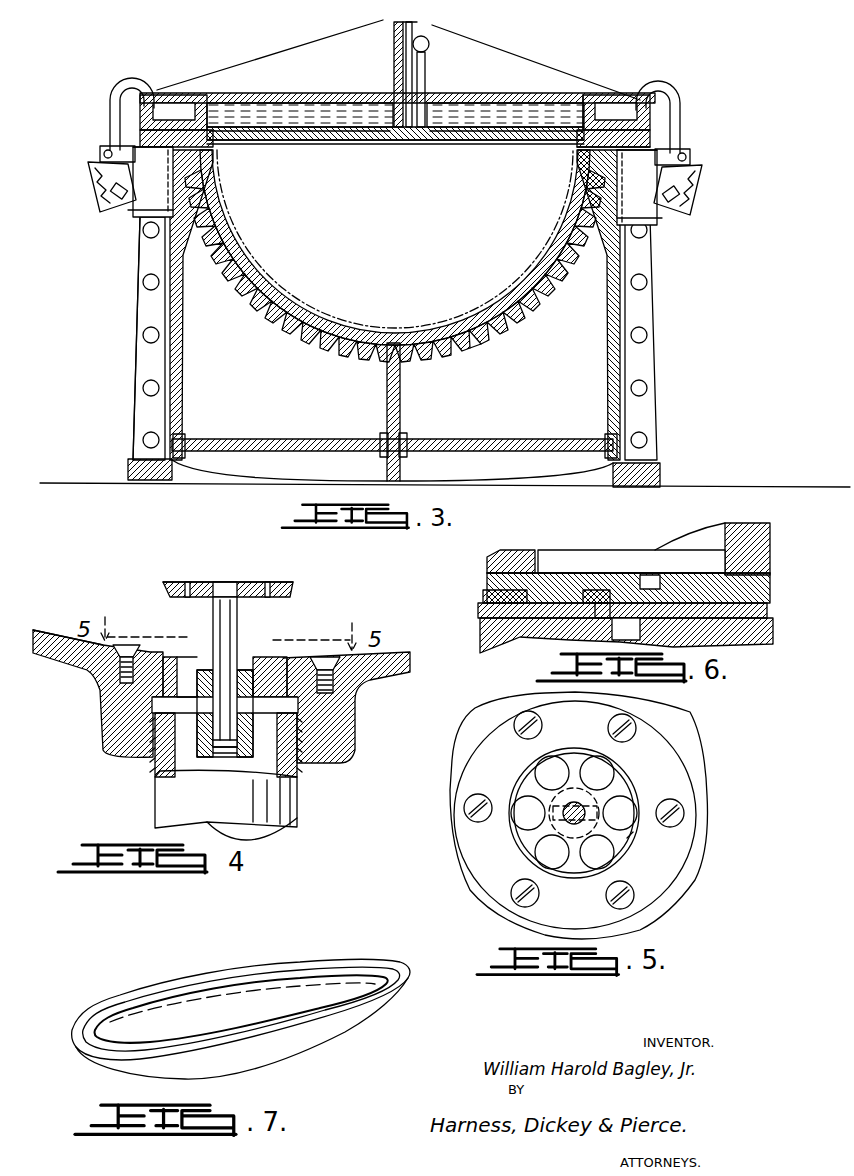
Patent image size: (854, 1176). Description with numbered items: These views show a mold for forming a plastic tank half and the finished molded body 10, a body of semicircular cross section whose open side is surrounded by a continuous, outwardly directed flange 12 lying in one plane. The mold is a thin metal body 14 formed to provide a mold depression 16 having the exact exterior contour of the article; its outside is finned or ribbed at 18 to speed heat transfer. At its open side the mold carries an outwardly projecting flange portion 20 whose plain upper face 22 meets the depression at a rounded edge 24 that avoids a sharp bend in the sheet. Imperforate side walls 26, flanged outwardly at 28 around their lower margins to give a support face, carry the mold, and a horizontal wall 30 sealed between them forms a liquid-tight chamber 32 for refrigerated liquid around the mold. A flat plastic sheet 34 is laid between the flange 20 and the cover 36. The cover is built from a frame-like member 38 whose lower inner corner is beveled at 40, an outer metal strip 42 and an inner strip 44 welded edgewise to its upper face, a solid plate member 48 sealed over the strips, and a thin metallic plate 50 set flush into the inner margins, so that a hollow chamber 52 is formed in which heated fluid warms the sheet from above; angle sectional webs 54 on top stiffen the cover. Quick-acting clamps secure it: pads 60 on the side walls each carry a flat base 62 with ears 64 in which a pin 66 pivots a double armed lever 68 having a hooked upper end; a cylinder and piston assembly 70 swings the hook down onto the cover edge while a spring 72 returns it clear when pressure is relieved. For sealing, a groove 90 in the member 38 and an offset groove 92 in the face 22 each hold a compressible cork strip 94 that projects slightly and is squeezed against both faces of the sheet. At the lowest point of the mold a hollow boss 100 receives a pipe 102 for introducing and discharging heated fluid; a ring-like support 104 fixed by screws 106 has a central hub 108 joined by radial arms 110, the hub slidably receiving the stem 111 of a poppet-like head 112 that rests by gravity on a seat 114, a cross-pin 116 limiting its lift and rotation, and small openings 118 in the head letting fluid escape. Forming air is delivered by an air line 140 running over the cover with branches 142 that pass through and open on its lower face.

In FIG. 7, the pan liner 10 is at (214, 990).
In FIG. 7, the flange 12 is at (133, 995).
In FIG. 3, the mold body 14 is at (300, 310).
In FIG. 4, the mold body 14 is at (40, 668).
In FIG. 5, the mold body 14 is at (703, 802).
In FIG. 3, the mold depression 16 is at (298, 335).
In FIG. 4, the mold depression 16 is at (60, 628).
In FIG. 6, the mold depression 16 is at (482, 640).
In FIG. 3, the fins or ribs 18 is at (480, 335).
In FIG. 3, the flange portion 20 is at (140, 145).
In FIG. 6, the flange portion 20 is at (697, 623).
In FIG. 3, the upper face 22 is at (140, 135).
In FIG. 6, the upper face 22 is at (655, 580).
In FIG. 6, the rounded edge 24 is at (478, 612).
In FIG. 3, the side walls 26 is at (170, 308).
In FIG. 3, the outward flange 28 is at (128, 468).
In FIG. 3, the horizontal wall 30 is at (348, 418).
In FIG. 3, the liquid-tight chamber 32 is at (562, 393).
In FIG. 3, the plastic sheet 34 is at (298, 140).
In FIG. 6, the plastic sheet 34 is at (538, 600).
In FIG. 3, the cover 36 is at (560, 98).
In FIG. 3, the frame-like member 38 is at (665, 137).
In FIG. 6, the frame-like member 38 is at (650, 585).
In FIG. 3, the bevel 40 is at (584, 144).
In FIG. 6, the bevel 40 is at (487, 563).
In FIG. 3, the outer metal strip 42 is at (140, 108).
In FIG. 6, the outer metal strip 42 is at (748, 523).
In FIG. 3, the inner metal strip 44 is at (600, 115).
In FIG. 3, the solid plate member 48 is at (476, 97).
In FIG. 3, the thin metallic plate 50 is at (353, 125).
In FIG. 6, the thin metallic plate 50 is at (483, 597).
In FIG. 3, the cover chamber 52 is at (320, 108).
In FIG. 3, the angle sectional webs 54 is at (322, 42).
In FIG. 3, the pads 60 is at (166, 174).
In FIG. 3, the base 62 is at (135, 212).
In FIG. 3, the ears or bosses 64 is at (110, 150).
In FIG. 3, the pin 66 is at (100, 154).
In FIG. 3, the double armed lever 68 is at (143, 78).
In FIG. 3, the cylinder and piston assembly 70 is at (105, 198).
In FIG. 3, the spring 72 is at (92, 183).
In FIG. 6, the groove 90 is at (592, 592).
In FIG. 6, the groove 92 is at (625, 628).
In FIG. 6, the resilient strip 94 is at (607, 600).
In FIG. 4, the hollow boss 100 is at (350, 726).
In FIG. 4, the pipe 102 is at (290, 800).
In FIG. 4, the ring-like support 104 is at (150, 705).
In FIG. 5, the ring-like support 104 is at (672, 778).
In FIG. 4, the screws 106 is at (120, 675).
In FIG. 5, the screws 106 is at (475, 815).
In FIG. 4, the central hub 108 is at (245, 690).
In FIG. 4, the radial arms 110 is at (178, 660).
In FIG. 5, the radial arms 110 is at (597, 792).
In FIG. 4, the stem 111 is at (237, 625).
In FIG. 5, the stem 111 is at (566, 818).
In FIG. 4, the head 112 is at (295, 585).
In FIG. 4, the seat 114 is at (290, 660).
In FIG. 5, the seat 114 is at (630, 835).
In FIG. 4, the cross-pin 116 is at (200, 728).
In FIG. 4, the openings 118 is at (192, 582).
In FIG. 3, the air line 140 is at (428, 38).
In FIG. 3, the branches 142 is at (472, 80).